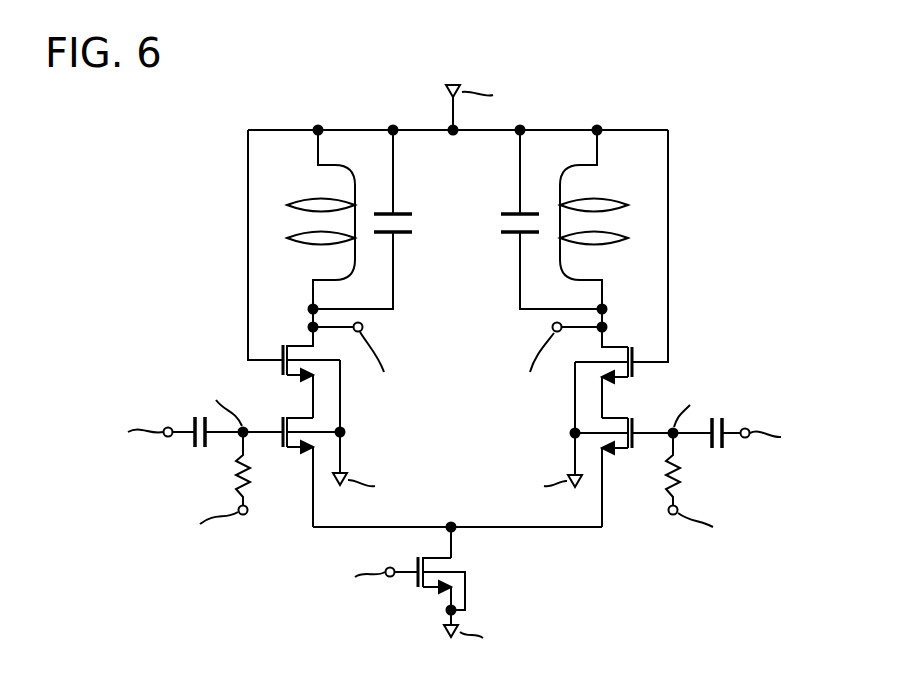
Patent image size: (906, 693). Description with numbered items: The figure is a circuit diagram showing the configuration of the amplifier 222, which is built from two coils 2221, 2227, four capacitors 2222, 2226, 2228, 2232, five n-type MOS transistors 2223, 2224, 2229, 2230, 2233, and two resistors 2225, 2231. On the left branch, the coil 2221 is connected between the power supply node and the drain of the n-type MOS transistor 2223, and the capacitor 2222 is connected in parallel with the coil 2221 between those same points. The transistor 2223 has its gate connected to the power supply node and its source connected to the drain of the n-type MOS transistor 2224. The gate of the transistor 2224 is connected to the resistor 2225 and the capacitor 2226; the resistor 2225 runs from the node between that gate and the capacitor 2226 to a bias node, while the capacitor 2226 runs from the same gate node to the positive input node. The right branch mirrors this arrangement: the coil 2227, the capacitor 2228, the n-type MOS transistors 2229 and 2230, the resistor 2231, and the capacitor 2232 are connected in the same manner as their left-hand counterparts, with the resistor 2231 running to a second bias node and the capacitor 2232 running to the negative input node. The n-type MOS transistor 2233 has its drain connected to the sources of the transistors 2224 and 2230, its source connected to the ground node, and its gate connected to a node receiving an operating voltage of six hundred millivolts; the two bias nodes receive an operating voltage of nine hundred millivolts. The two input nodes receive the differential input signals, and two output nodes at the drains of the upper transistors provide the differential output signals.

The amplifier 222 is at (478, 48).
The coil 2221 is at (295, 203).
The capacitor 2222 is at (433, 192).
The n-type MOS transistor 2223 is at (302, 342).
The n-type MOS transistor 2224 is at (292, 452).
The resistor 2225 is at (236, 484).
The capacitor 2226 is at (194, 412).
The coil 2227 is at (642, 177).
The capacitor 2228 is at (506, 236).
The n-type MOS transistor 2229 is at (613, 344).
The n-type MOS transistor 2230 is at (620, 452).
The resistor 2231 is at (680, 486).
The capacitor 2232 is at (720, 416).
The n-type MOS transistor 2233 is at (432, 594).